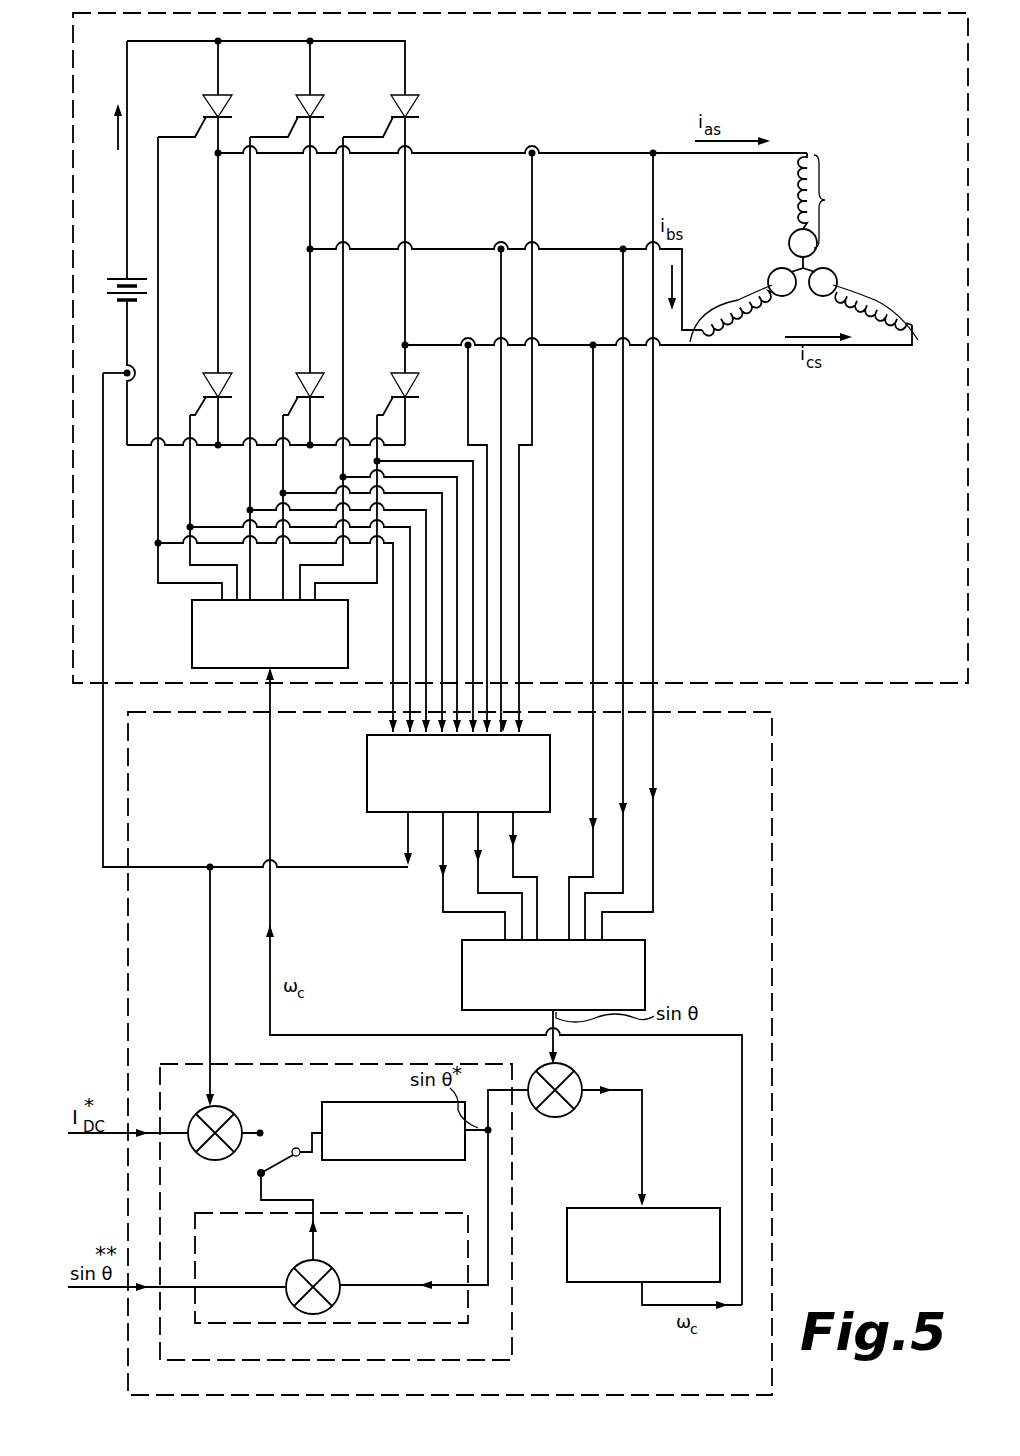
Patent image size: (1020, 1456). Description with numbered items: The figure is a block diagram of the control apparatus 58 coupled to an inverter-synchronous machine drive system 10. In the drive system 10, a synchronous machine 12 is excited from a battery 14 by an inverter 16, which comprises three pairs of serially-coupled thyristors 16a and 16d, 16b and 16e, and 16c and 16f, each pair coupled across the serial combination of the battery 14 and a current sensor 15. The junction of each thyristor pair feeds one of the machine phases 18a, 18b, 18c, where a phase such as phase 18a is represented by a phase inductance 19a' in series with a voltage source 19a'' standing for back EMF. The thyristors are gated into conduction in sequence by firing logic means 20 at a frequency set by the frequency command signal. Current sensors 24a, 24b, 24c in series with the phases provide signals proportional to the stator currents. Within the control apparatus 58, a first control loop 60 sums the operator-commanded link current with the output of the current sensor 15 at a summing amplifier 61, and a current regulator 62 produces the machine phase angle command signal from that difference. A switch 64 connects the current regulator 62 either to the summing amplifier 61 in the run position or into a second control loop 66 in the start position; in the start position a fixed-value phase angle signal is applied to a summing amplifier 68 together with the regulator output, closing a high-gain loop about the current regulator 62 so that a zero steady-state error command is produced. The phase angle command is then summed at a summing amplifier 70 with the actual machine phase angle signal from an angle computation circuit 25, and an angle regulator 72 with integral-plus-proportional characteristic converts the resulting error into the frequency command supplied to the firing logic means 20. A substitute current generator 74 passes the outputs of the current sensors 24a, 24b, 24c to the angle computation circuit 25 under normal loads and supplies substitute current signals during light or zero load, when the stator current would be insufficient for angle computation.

The inverter-synchronous machine drive system 10 is at (100, 683).
The synchronous machine 12 is at (814, 318).
The battery 14 is at (124, 276).
The current sensor 15 is at (122, 368).
The inverter 16 is at (292, 294).
The thyristor 16a is at (205, 95).
The thyristor 16b is at (297, 95).
The thyristor 16c is at (392, 95).
The thyristor 16d is at (209, 373).
The thyristor 16e is at (302, 373).
The thyristor 16f is at (394, 373).
The machine phase 18a is at (826, 200).
The machine phase 18b is at (740, 299).
The machine phase 18c is at (876, 300).
The phase inductance 19a' is at (754, 177).
The voltage source 19a'' is at (754, 209).
The firing logic means 20 is at (281, 645).
The current sensor 24a is at (530, 150).
The current sensor 24b is at (499, 245).
The current sensor 24c is at (466, 342).
The angle computation circuit 25 is at (564, 985).
The control apparatus 58 is at (140, 1388).
The first control loop 60 is at (205, 1356).
The summing amplifier 61 is at (204, 1160).
The current regulator 62 is at (362, 1102).
The switch 64 is at (292, 1140).
The second control loop 66 is at (238, 1318).
The summing amplifier 68 is at (333, 1295).
The summing amplifier 70 is at (572, 1110).
The angle regulator 72 is at (700, 1208).
The substitute current generator 74 is at (367, 776).